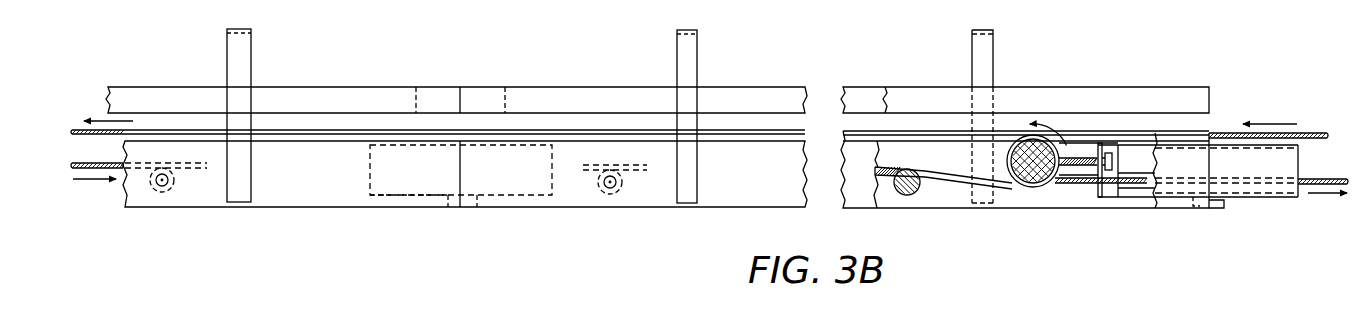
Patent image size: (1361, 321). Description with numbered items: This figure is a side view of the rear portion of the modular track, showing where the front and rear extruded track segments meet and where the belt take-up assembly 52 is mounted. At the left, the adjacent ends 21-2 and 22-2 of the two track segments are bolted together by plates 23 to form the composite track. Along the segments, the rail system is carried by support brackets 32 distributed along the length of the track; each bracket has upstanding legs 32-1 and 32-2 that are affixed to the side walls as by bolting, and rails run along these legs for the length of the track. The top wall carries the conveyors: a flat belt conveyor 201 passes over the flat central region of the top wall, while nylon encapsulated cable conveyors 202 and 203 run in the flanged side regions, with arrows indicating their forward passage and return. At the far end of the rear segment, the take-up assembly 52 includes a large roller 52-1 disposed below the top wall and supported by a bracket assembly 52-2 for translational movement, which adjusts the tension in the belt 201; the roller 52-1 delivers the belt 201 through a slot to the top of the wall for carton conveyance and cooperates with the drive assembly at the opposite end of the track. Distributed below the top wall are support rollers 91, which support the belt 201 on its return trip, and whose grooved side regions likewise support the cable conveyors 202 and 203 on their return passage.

The flat belt conveyor 201 is at (185, 130).
The nylon encapsulated cable conveyor 202 is at (74, 128).
The nylon encapsulated cable conveyor 203 is at (1320, 133).
The adjacent end of front track segment 21-2 is at (418, 207).
The adjacent end of rear track segment 22-2 is at (525, 207).
The plates 23 is at (488, 180).
The support brackets 32 is at (243, 26).
The upstanding leg 32-1 is at (994, 67).
The upstanding leg 32-2 is at (245, 60).
The belt take-up assembly 52 is at (1012, 201).
The large roller 52-1 is at (1037, 178).
The bracket assembly 52-2 is at (1103, 193).
The support rollers 91 is at (165, 190).